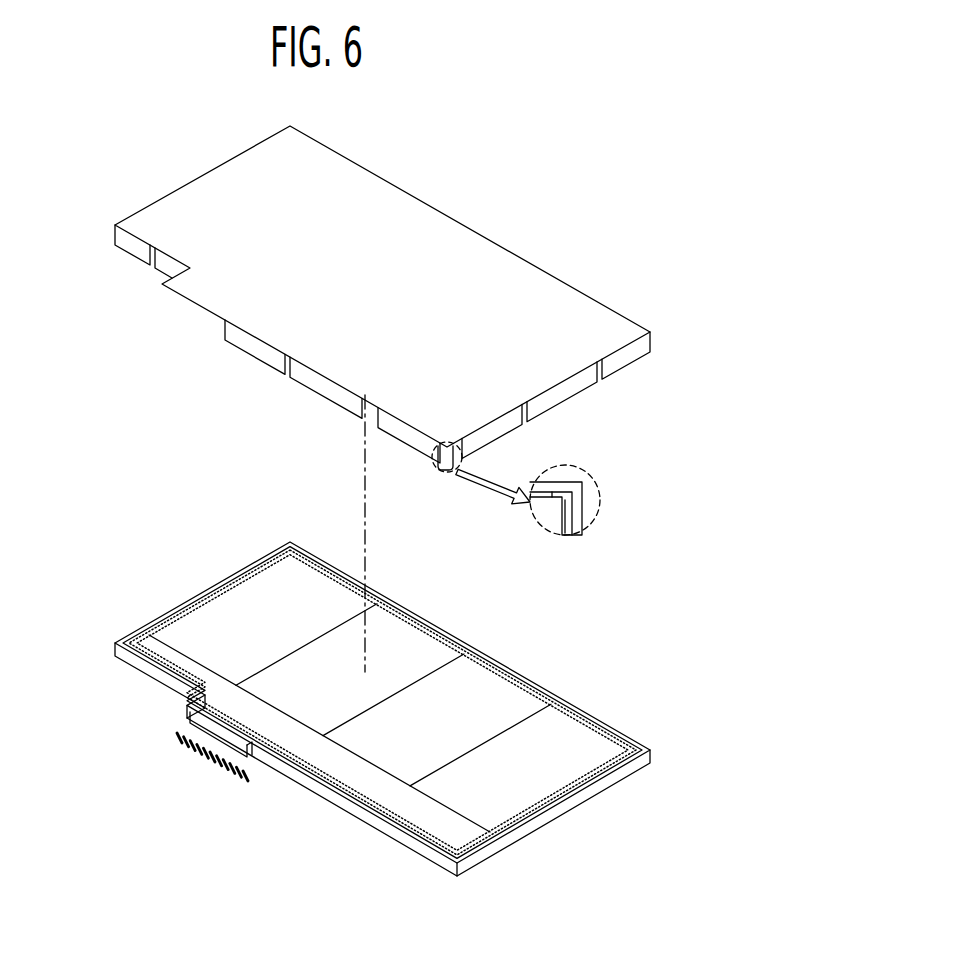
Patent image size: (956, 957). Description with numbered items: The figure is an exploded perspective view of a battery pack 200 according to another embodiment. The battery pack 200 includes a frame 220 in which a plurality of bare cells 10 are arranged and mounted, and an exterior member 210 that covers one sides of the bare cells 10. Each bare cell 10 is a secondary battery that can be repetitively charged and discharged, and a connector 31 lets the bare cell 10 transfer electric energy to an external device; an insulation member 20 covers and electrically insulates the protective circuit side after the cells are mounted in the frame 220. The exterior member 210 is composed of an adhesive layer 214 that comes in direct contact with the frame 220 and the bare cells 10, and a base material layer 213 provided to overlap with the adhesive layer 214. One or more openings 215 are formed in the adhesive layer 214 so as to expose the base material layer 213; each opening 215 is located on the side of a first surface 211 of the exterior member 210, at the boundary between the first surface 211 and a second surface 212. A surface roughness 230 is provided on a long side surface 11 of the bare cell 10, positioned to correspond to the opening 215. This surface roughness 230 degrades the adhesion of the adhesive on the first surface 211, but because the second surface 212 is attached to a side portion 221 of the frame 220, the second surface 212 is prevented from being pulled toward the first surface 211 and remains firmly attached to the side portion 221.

The battery pack 200 is at (527, 160).
The exterior member 210 is at (553, 240).
The first surface 211 is at (597, 320).
The second surface 212 is at (632, 357).
The base material layer 213 is at (567, 483).
The adhesive layer 214 is at (572, 518).
The opening 215 is at (562, 520).
The frame 220 is at (117, 668).
The side portion 221 is at (117, 645).
The surface roughness 230 is at (227, 592).
The bare cell 10 is at (577, 693).
The long side surface 11 is at (575, 733).
The insulation member 20 is at (342, 757).
The connector 31 is at (193, 750).